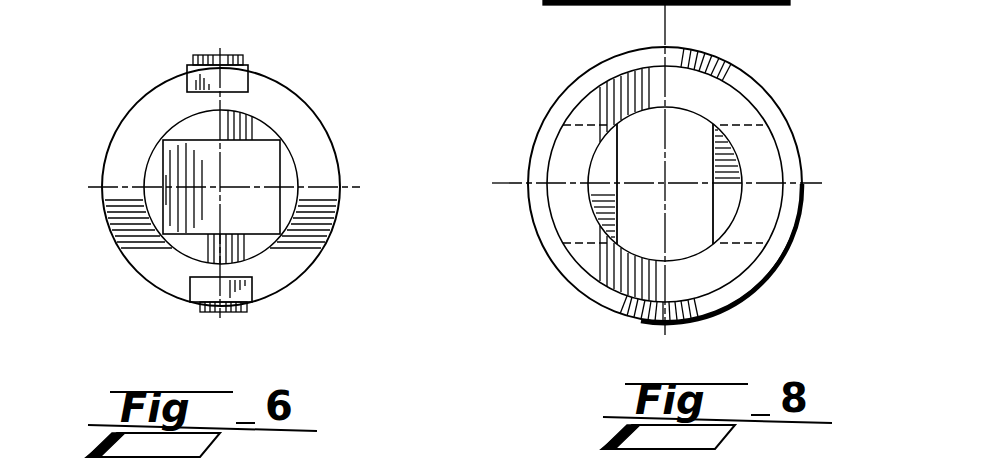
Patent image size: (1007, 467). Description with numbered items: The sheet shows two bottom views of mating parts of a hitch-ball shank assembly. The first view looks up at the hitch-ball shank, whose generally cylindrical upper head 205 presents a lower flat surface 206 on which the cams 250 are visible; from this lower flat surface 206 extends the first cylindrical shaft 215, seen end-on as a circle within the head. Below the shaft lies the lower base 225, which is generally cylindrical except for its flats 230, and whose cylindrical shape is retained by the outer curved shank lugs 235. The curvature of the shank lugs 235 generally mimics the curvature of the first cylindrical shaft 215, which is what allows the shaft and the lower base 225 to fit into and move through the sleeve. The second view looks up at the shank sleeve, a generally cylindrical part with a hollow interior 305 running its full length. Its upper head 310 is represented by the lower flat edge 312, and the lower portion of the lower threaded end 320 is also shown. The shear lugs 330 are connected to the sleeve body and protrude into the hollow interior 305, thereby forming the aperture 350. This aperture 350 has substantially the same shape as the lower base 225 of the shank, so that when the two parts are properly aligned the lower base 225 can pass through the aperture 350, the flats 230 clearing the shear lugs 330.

In FIG. 6, the upper head 205 is at (143, 88).
In FIG. 6, the lower flat surface 206 is at (137, 135).
In FIG. 6, the first cylindrical shaft 215 is at (247, 125).
In FIG. 6, the lower base 225 is at (253, 207).
In FIG. 6, the flats 230 is at (260, 128).
In FIG. 6, the shank lugs 235 is at (143, 167).
In FIG. 6, the cams 250 is at (240, 78).
In FIG. 8, the hollow interior 305 is at (767, 5).
In FIG. 8, the upper head 310 is at (563, 90).
In FIG. 8, the lower flat edge 312 is at (593, 80).
In FIG. 8, the lower threaded end 320 is at (715, 285).
In FIG. 8, the shear lugs 330 is at (598, 165).
In FIG. 8, the aperture 350 is at (697, 230).